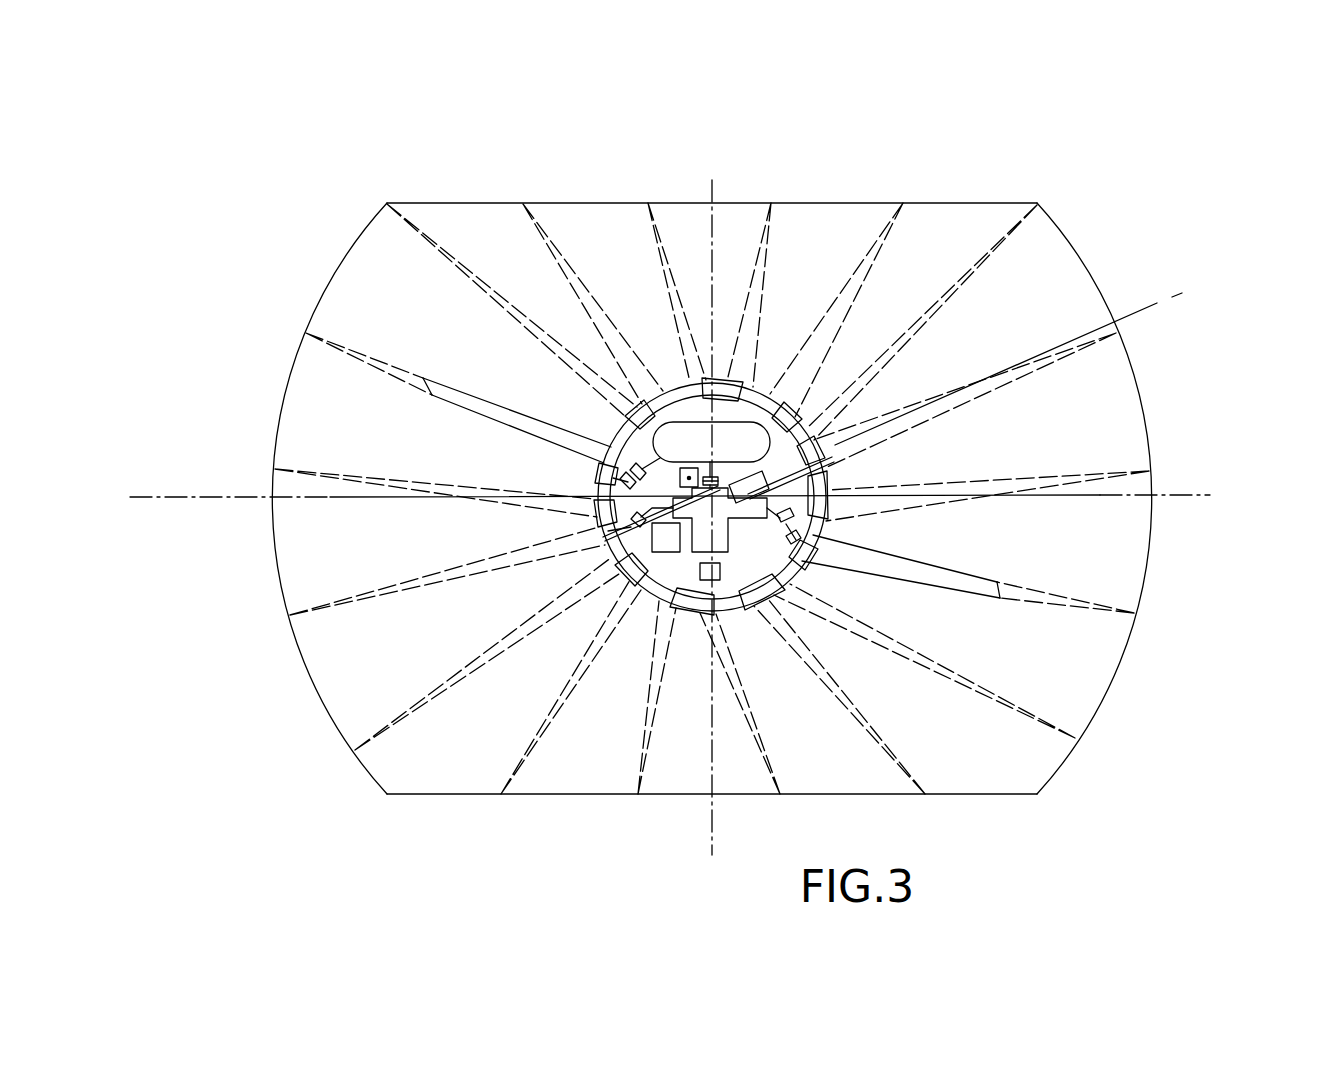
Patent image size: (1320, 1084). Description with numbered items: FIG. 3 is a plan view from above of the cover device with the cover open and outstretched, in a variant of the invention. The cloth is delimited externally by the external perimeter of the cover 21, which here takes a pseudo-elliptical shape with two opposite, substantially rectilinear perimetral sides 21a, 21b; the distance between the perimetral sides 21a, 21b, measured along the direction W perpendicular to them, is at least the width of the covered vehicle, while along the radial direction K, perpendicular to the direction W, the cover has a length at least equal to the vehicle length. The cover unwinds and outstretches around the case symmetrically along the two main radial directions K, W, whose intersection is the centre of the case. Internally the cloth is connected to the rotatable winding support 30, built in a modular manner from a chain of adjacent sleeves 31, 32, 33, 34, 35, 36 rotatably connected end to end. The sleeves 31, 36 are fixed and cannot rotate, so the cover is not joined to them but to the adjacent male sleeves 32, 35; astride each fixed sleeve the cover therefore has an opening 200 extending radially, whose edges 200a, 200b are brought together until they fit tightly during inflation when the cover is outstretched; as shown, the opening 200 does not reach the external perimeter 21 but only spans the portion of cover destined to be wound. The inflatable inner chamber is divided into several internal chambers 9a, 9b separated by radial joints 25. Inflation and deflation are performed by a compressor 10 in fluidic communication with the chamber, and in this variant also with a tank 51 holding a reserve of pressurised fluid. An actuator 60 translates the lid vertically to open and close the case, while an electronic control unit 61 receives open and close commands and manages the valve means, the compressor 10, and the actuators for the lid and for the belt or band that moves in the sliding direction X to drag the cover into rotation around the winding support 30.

The compressor 10 is at (790, 577).
The external perimeter of the cover 21 is at (1140, 392).
The perimetral side 21a is at (985, 794).
The perimetral side 21b is at (498, 203).
The radial joint 25 is at (360, 598).
The rotatable winding support 30 is at (653, 608).
The sleeve 31 is at (607, 468).
The sleeve 32 is at (617, 402).
The sleeve 33 is at (637, 408).
The sleeve 34 is at (820, 488).
The sleeve 35 is at (813, 523).
The sleeve 36 is at (820, 553).
The tank 51 is at (744, 437).
The actuator 60 is at (692, 466).
The electronic control unit 61 is at (663, 603).
The internal chamber 9a is at (357, 703).
The internal chamber 9b is at (323, 548).
The opening 200 is at (423, 380).
The edge of the opening 200a is at (515, 428).
The edge of the opening 200b is at (478, 397).
The radial direction K is at (150, 499).
The direction W is at (712, 850).
The sliding direction X is at (1208, 280).